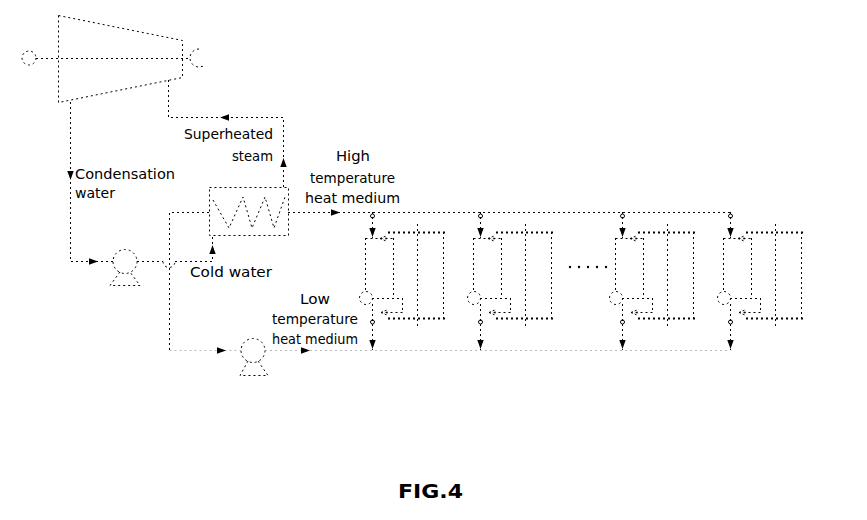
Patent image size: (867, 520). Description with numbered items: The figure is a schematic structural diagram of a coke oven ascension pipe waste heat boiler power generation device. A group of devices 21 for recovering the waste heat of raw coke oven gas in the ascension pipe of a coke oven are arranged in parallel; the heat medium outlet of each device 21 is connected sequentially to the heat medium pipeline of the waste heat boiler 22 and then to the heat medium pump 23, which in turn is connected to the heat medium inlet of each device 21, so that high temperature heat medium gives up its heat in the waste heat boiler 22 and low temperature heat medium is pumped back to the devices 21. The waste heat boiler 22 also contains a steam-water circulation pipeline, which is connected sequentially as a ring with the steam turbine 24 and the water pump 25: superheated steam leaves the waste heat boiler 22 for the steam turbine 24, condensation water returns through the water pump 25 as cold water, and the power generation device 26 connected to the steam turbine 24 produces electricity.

The device for recovering the waste heat of raw coke oven gas in the ascension pipe 21 is at (599, 257).
The waste heat boiler 22 is at (288, 198).
The heat medium pump 23 is at (269, 368).
The steam turbine 24 is at (134, 59).
The water pump 25 is at (131, 286).
The power generation device 26 is at (38, 95).